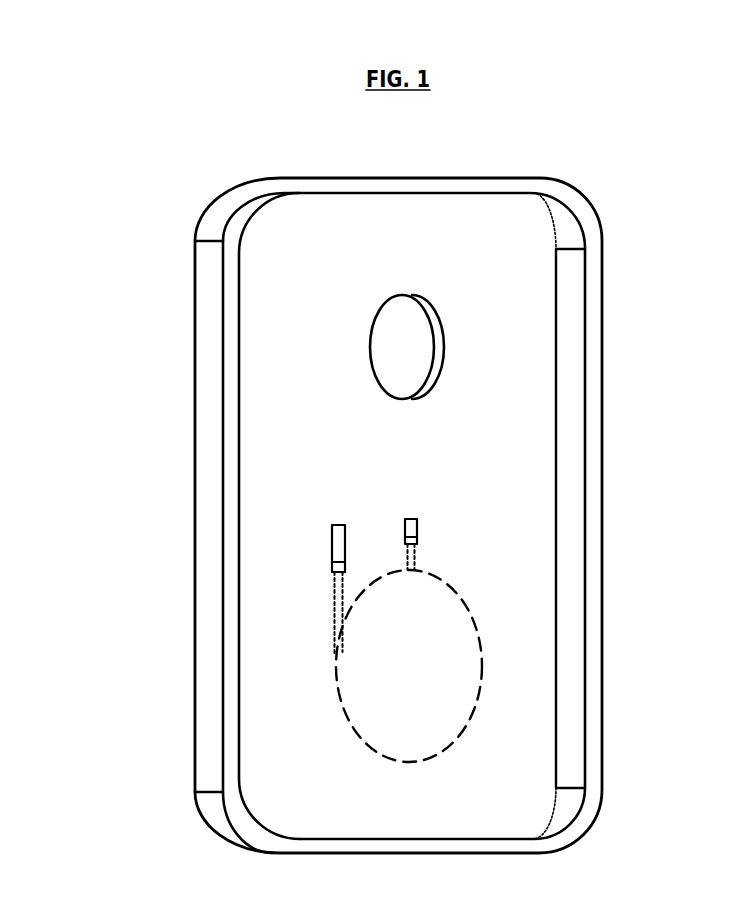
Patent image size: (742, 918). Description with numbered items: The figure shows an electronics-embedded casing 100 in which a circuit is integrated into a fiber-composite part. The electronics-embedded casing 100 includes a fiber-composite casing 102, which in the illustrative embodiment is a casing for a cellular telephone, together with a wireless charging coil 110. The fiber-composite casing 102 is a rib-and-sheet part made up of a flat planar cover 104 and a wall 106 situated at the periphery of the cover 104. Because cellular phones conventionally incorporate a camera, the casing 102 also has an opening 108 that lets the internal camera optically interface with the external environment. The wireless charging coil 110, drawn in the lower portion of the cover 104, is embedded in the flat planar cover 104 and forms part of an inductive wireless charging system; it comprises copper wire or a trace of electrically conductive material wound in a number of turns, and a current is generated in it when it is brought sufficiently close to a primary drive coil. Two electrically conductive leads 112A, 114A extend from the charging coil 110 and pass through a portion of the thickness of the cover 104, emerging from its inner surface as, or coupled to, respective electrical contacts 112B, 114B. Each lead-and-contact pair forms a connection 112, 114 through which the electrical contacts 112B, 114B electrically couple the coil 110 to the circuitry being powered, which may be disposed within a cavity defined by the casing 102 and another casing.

The electronics-embedded casing 100 is at (134, 226).
The fiber-composite casing 102 is at (590, 197).
The flat planar cover 104 is at (328, 402).
The wall 106 is at (208, 433).
The opening 108 is at (402, 310).
The wireless charging coil 110 is at (430, 676).
The first sensor assembly 112 is at (223, 573).
The electrically conductive lead 112A is at (330, 597).
The electrical contact 112B is at (332, 550).
The second sensor assembly 114 is at (548, 497).
The electrically conductive lead 114A is at (417, 562).
The electrical contact 114B is at (415, 522).